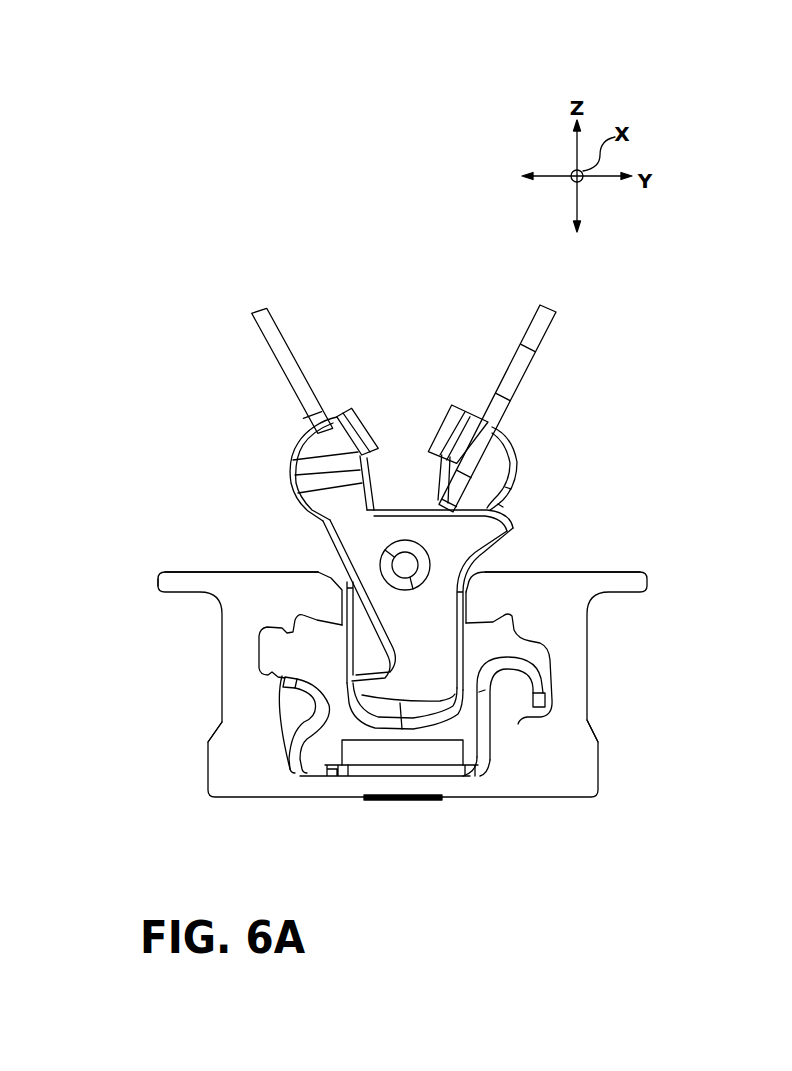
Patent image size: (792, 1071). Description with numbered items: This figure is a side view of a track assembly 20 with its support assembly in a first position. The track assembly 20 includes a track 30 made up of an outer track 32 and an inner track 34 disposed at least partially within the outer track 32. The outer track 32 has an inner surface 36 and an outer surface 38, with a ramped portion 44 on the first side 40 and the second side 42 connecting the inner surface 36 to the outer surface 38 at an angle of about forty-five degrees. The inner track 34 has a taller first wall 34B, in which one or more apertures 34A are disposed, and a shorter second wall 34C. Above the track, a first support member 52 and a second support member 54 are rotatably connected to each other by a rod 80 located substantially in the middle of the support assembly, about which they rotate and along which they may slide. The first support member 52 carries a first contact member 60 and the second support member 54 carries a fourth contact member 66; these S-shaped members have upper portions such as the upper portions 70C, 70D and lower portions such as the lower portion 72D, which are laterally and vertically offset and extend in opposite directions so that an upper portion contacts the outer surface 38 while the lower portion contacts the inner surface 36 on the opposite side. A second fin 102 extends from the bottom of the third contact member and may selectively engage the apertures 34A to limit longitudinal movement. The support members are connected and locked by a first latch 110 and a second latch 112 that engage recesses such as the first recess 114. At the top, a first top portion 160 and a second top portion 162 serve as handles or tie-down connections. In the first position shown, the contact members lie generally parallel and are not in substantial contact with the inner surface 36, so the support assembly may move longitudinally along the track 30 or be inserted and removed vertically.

The track assembly 20 is at (410, 235).
The track 30 is at (529, 827).
The outer track 32 is at (573, 725).
The inner track 34 is at (407, 770).
The aperture 34A is at (498, 663).
The first portion/wall 34B is at (530, 717).
The second portion/wall 34C is at (306, 726).
The inner surface 36 is at (303, 650).
The outer surface 38 is at (214, 564).
The first side 40 is at (658, 578).
The second side 42 is at (148, 582).
The ramped portion 44 is at (326, 573).
The first support member 52 is at (552, 381).
The second support member 54 is at (262, 398).
The first contact member 60 is at (497, 462).
The fourth contact member 66 is at (440, 632).
The upper portion 70C is at (302, 520).
The upper portion 70D is at (510, 530).
The lower portion 72D is at (368, 715).
The rod 80 is at (406, 562).
The second fin 102 is at (393, 700).
The first latch 110 is at (443, 415).
The second latch 112 is at (366, 423).
The first aperture/recess 114 is at (515, 566).
The first top portion 160 is at (537, 323).
The second top portion 162 is at (268, 325).